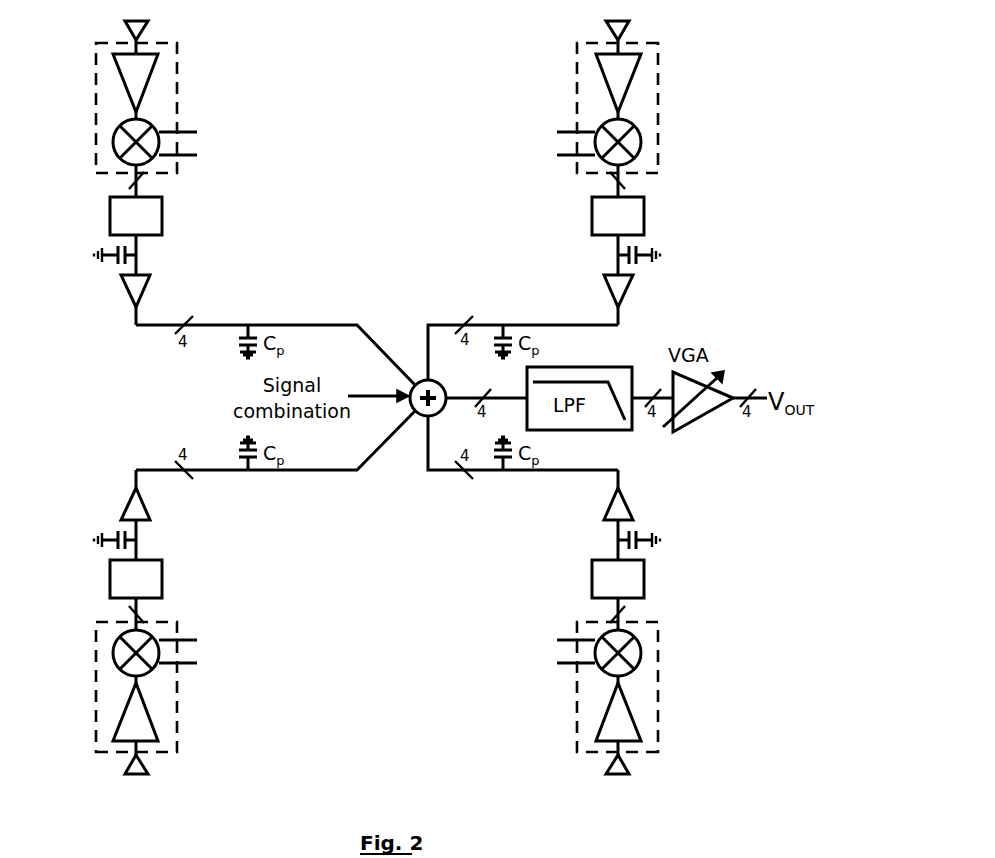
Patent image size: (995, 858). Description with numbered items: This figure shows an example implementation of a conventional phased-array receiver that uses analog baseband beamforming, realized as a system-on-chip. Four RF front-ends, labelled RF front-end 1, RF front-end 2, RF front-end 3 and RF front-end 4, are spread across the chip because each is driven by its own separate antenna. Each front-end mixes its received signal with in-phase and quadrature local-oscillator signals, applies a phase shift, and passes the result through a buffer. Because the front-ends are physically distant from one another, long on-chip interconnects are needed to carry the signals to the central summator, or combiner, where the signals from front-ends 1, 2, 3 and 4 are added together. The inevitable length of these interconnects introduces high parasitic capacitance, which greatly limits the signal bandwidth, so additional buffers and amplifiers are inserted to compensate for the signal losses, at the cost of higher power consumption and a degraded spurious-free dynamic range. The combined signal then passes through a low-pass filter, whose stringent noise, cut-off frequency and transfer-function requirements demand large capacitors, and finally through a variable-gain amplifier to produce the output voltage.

The first RF receive chain (RF1) 1 is at (156, 173).
The second RF receive chain (RF2) 2 is at (593, 173).
The third RF receive chain (RF3) 3 is at (156, 622).
The fourth RF receive chain (RF4) 4 is at (593, 622).